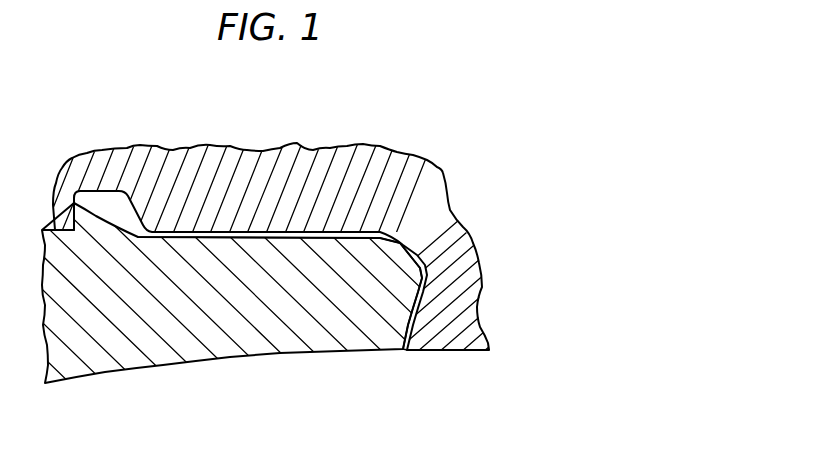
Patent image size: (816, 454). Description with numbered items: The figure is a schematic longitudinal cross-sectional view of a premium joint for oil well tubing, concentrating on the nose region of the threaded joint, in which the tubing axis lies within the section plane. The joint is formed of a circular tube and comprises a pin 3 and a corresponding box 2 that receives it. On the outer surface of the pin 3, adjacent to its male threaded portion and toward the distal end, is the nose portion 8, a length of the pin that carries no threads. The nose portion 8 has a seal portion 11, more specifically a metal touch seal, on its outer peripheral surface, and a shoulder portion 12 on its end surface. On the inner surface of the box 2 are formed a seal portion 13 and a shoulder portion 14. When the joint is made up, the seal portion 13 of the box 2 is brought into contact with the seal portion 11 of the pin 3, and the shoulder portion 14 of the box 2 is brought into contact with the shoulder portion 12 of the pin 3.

The box 2 is at (333, 165).
The pin 3 is at (158, 327).
The nose portion 8 is at (368, 285).
The seal portion 11 is at (400, 242).
The shoulder portion 12 is at (423, 312).
The seal portion 13 is at (412, 232).
The shoulder portion 14 is at (423, 312).